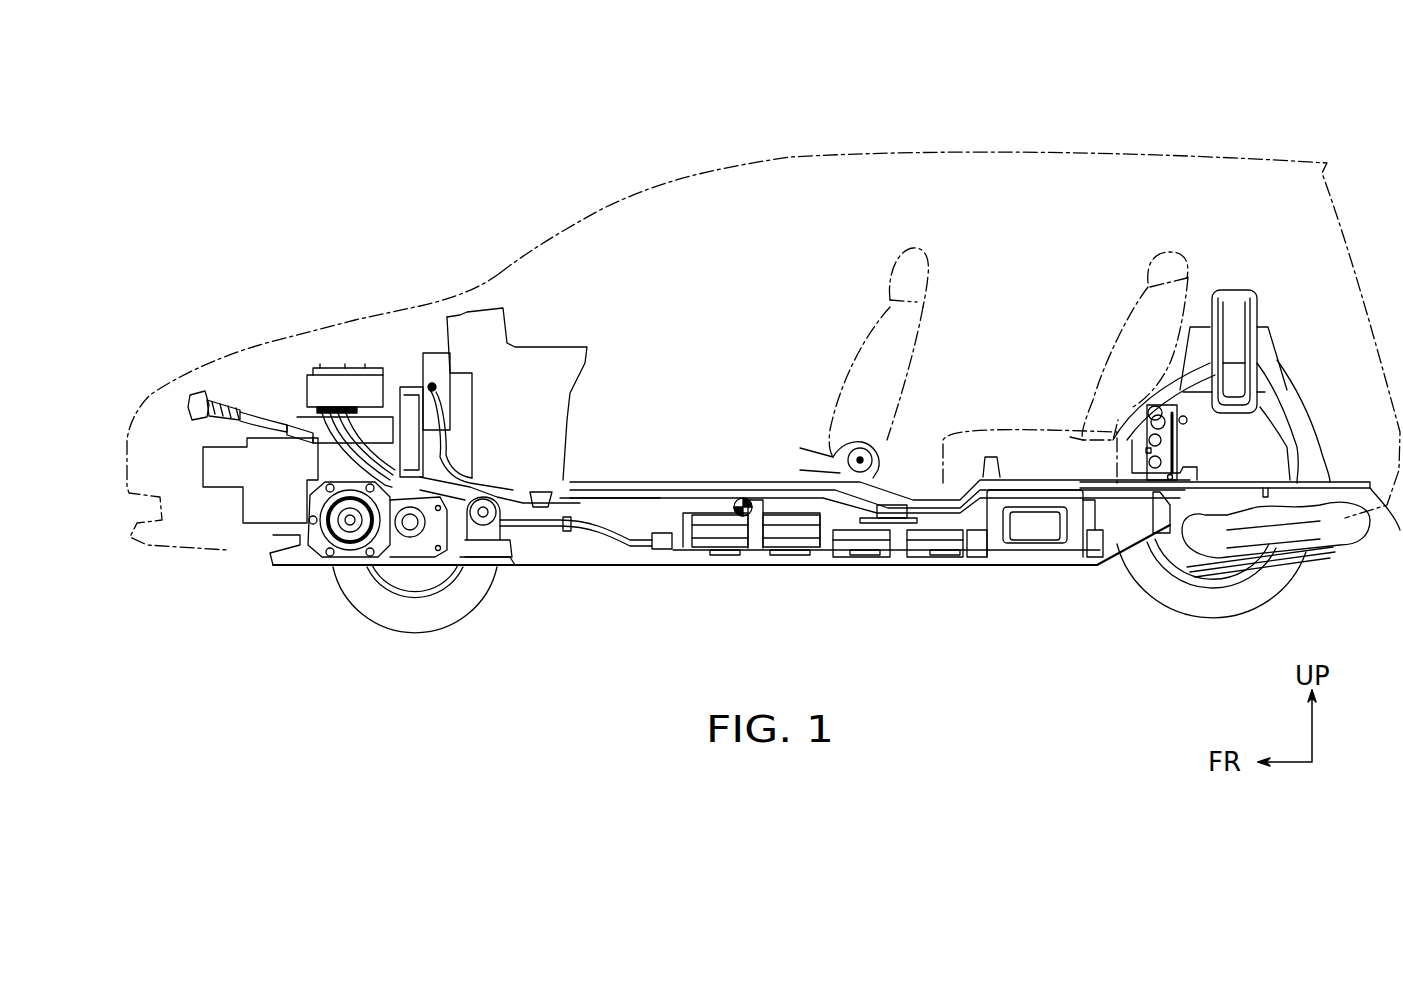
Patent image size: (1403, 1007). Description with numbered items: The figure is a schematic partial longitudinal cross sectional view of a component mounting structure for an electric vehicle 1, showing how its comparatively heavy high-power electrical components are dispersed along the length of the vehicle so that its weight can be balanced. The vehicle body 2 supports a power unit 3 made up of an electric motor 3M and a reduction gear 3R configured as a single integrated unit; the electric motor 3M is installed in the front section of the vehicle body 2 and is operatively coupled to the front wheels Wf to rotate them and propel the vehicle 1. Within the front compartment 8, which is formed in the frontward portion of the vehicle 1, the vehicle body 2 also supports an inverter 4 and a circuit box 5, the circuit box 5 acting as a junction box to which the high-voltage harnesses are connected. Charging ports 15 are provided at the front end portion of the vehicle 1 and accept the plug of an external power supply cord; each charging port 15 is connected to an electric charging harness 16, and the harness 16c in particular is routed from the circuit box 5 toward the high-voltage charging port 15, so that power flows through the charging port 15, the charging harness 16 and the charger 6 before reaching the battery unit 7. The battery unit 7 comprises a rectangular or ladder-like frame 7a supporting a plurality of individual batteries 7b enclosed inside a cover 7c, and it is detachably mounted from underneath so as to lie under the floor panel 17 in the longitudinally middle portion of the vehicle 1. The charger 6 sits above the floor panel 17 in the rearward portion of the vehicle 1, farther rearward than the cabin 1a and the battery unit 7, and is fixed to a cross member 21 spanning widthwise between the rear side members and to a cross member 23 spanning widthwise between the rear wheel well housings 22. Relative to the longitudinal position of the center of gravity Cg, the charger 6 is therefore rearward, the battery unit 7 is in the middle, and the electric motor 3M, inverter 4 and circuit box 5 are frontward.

The electric vehicle 1 is at (1068, 152).
The cabin 1a is at (1003, 261).
The vehicle body 2 is at (506, 568).
The power unit 3 is at (368, 591).
The electric motor 3M is at (348, 557).
The reduction gear 3R is at (410, 557).
The inverter 4 is at (340, 385).
The circuit box 5 is at (412, 405).
The charger 6 is at (1195, 395).
The battery unit 7 is at (1060, 568).
The frame 7a is at (822, 522).
The batteries 7b is at (735, 535).
The cover 7c is at (765, 503).
The front compartment 8 is at (275, 368).
The charging port 15 is at (205, 395).
The electric charging harness 16 is at (260, 525).
The second high-voltage harness 16c is at (313, 447).
The floor panel 17 is at (655, 480).
The cross member 21 is at (1185, 530).
The rear wheel well housing 22 is at (1290, 440).
The cross member 23 is at (1188, 422).
The center of gravity Cg is at (743, 497).
The front wheels Wf is at (458, 605).